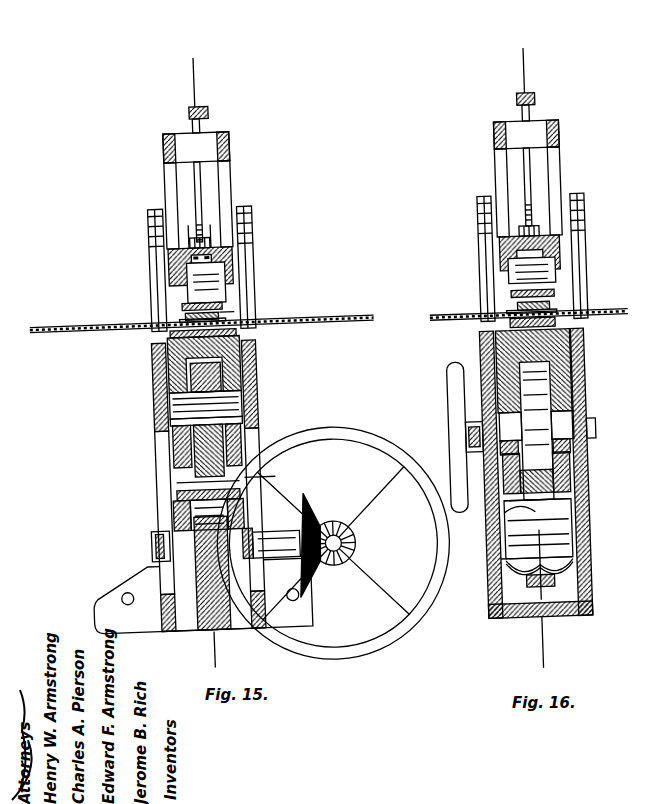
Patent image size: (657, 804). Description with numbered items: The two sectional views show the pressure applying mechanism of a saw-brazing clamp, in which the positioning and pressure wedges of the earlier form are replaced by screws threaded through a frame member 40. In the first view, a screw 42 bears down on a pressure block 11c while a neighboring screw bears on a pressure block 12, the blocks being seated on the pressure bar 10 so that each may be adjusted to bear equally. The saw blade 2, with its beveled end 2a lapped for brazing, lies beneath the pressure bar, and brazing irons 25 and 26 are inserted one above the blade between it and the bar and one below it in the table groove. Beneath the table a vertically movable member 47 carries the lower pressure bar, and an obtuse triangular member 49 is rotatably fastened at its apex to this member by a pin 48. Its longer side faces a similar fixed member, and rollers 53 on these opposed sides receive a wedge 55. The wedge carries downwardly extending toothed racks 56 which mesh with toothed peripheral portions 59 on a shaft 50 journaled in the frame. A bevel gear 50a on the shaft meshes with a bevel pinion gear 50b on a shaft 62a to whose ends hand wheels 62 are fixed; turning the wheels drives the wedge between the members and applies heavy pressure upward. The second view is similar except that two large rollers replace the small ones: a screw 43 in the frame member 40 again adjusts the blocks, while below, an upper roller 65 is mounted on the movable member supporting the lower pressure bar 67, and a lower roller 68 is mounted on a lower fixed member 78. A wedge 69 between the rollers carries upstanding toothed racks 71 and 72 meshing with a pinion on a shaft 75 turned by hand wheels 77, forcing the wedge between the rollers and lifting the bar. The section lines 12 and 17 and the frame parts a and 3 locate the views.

In FIG. 15, the pressure block 12 is at (193, 80).
In FIG. 15, the screw 42 is at (196, 192).
In FIG. 15, the frame post a is at (238, 253).
In FIG. 15, the pressure block 11c is at (176, 303).
In FIG. 15, the pressure bar 10 is at (216, 314).
In FIG. 15, the saw blade 2 is at (68, 329).
In FIG. 16, the saw blade 2 is at (612, 312).
In FIG. 15, the end of band saw 2a is at (186, 320).
In FIG. 16, the end of band saw 2a is at (483, 309).
In FIG. 15, the brazing iron 25 is at (219, 321).
In FIG. 15, the brazing iron 26 is at (231, 329).
In FIG. 16, the brazing iron 26 is at (549, 306).
In FIG. 15, the vertically movable member 47 is at (149, 372).
In FIG. 15, the pin 48 is at (213, 409).
In FIG. 15, the obtuse triangular member 49 is at (162, 443).
In FIG. 15, the rollers 53 is at (156, 509).
In FIG. 15, the toothed racks 56 is at (155, 519).
In FIG. 15, the toothed peripheral portions 59 is at (164, 630).
In FIG. 15, the hand wheels 62 is at (357, 447).
In FIG. 15, the shaft 62a is at (317, 571).
In FIG. 15, the shaft 50 is at (265, 561).
In FIG. 15, the bevel gear 50a is at (291, 529).
In FIG. 15, the bevel pinion gear 50b is at (333, 546).
In FIG. 15, the wedge 55 is at (226, 480).
In FIG. 16, the section line 17- 17 is at (523, 63).
In FIG. 16, the screw 43 is at (523, 178).
In FIG. 16, the frame member 40 is at (574, 238).
In FIG. 16, the frame 3 is at (652, 351).
In FIG. 16, the lower pressure bar 67 is at (545, 356).
In FIG. 16, the roller 65 is at (526, 399).
In FIG. 16, the shaft 75 is at (578, 430).
In FIG. 16, the hand wheels 77 is at (447, 386).
In FIG. 16, the toothed rack 71 is at (506, 473).
In FIG. 16, the toothed rack 72 is at (546, 479).
In FIG. 16, the wedge 69 is at (520, 496).
In FIG. 16, the roller 68 is at (529, 531).
In FIG. 16, the lower fixed member 78 is at (575, 574).